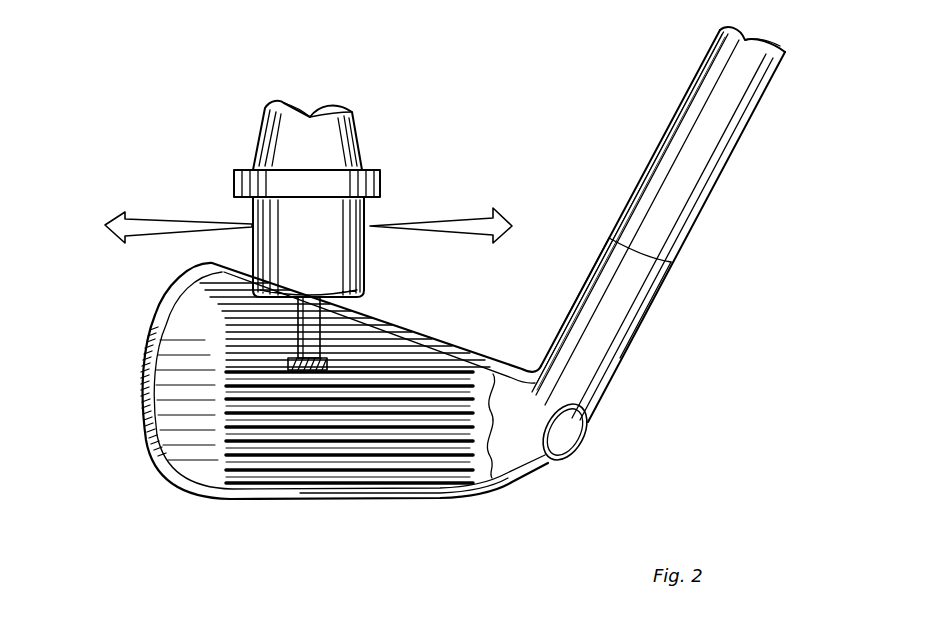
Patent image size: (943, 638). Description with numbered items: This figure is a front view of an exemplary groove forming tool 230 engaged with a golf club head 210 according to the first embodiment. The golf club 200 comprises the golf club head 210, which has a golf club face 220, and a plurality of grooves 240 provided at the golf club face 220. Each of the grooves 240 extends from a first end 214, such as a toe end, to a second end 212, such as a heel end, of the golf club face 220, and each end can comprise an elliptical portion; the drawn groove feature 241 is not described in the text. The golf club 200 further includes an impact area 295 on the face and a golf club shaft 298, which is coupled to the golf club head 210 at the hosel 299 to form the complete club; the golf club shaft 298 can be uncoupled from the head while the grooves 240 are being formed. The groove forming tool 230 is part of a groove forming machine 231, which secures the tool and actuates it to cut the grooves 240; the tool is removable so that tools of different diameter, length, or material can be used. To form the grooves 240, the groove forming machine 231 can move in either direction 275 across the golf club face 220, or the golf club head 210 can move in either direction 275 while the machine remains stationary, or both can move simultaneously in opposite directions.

The golf club 200 is at (727, 512).
The golf club head 210 is at (328, 498).
The second end 212 is at (516, 489).
The first end 214 is at (122, 367).
The golf club face 220 is at (176, 312).
The groove forming tool 230 is at (312, 328).
The groove forming machine 231 is at (357, 140).
The grooves 240 is at (545, 425).
The face grooves 241 is at (226, 474).
The direction 275 is at (120, 214).
The impact area 295 is at (243, 404).
The golf club shaft 298 is at (653, 203).
The hosel 299 is at (608, 348).